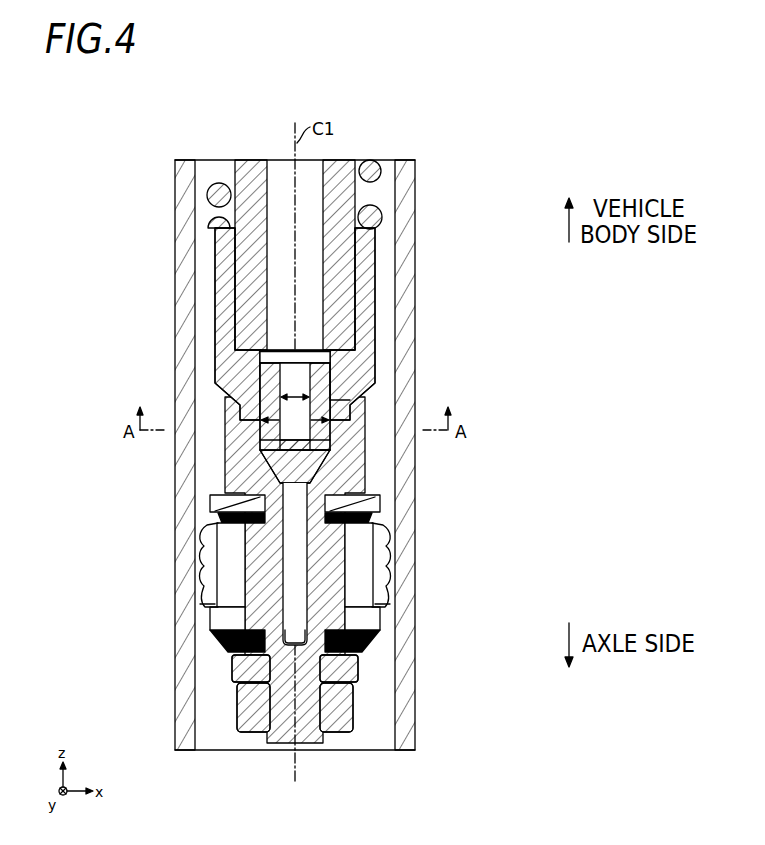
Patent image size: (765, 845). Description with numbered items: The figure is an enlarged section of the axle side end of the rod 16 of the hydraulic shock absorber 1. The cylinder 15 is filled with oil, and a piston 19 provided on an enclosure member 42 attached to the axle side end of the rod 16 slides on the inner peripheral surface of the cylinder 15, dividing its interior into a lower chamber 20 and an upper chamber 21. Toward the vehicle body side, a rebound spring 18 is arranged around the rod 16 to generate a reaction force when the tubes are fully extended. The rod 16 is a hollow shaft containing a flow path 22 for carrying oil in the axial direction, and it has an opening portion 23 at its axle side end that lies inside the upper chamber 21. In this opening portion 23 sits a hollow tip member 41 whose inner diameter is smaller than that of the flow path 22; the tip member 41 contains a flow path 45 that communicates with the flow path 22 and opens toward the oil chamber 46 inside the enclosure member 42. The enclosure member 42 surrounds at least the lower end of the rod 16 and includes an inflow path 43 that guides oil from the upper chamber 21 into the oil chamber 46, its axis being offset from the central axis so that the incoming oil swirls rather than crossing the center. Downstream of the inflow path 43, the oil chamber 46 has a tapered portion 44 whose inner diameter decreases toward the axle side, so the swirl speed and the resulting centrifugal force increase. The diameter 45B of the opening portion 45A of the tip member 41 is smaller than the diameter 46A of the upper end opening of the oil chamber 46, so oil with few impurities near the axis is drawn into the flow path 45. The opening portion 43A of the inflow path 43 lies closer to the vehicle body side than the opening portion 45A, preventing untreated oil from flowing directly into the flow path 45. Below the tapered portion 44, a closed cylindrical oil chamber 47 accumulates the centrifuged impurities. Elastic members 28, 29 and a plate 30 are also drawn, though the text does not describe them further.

The hydraulic shock absorber 1 is at (457, 140).
The cylinder 15 is at (407, 280).
The rod 16 is at (252, 280).
The rebound spring 18 is at (382, 215).
The piston 19 is at (380, 575).
The lower chamber 20 is at (380, 663).
The upper chamber 21 is at (378, 490).
The flow path 22 is at (276, 216).
The opening portion 23 is at (345, 380).
The elastic member 28 is at (212, 634).
The elastic member 29 is at (295, 641).
The plate 30 is at (380, 519).
The tip member 41 is at (333, 357).
The enclosure member 42 is at (347, 448).
The inflow path 43 is at (333, 427).
The opening portion 43A is at (365, 398).
The tapered portion 44 is at (280, 478).
The flow path 45 is at (268, 378).
The opening portion 45A is at (265, 442).
The diameter 45B is at (281, 397).
The oil chamber 46 is at (330, 468).
The diameter 46A is at (262, 422).
The oil chamber 47 is at (290, 576).